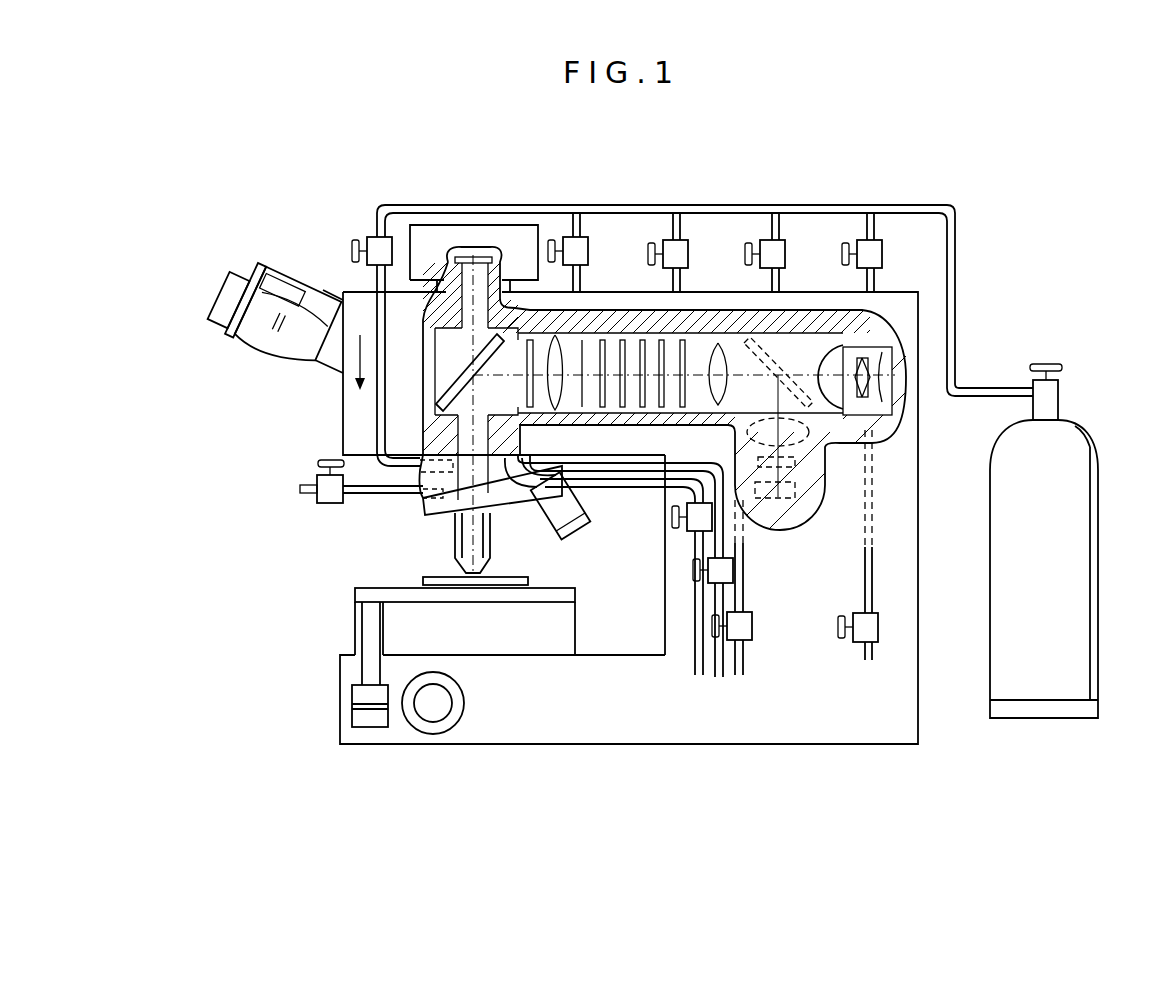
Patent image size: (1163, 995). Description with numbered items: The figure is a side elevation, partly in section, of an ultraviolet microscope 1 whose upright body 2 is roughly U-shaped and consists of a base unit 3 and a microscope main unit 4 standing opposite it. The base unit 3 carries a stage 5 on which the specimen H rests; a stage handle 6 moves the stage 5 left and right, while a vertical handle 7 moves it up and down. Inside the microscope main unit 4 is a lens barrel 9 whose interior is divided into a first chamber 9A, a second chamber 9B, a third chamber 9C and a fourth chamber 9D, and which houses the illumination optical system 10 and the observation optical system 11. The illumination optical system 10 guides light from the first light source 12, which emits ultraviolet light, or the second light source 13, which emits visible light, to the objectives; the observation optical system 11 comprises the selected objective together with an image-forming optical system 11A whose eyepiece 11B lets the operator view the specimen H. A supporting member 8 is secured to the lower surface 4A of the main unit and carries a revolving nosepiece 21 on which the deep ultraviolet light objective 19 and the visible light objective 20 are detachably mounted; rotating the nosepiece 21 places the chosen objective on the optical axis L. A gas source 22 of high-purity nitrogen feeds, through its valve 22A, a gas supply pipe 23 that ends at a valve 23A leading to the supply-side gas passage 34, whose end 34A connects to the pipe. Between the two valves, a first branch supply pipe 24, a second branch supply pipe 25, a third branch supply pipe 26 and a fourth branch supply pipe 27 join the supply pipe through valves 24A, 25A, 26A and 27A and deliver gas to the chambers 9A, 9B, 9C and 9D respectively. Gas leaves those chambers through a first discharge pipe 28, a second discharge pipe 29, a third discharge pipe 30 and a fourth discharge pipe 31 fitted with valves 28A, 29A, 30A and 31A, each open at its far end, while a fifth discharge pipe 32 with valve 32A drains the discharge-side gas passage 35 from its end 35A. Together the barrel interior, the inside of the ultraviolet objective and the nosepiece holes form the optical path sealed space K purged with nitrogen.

The ultraviolet microscope 1 is at (778, 163).
The upright body 2 is at (800, 750).
The base unit 3 is at (652, 735).
The microscope main unit 4 is at (908, 320).
The lower surface 4A is at (507, 512).
The stage 5 is at (360, 596).
The stage handle 6 is at (368, 722).
The vertical handle 7 is at (432, 722).
The supporting member 8 is at (442, 448).
The lens barrel 9 is at (662, 414).
The first chamber 9A is at (912, 348).
The second chamber 9B is at (835, 342).
The third chamber 9C is at (580, 407).
The fourth chamber 9D is at (530, 407).
The illumination optical system 10 is at (801, 368).
The observation optical system 11 is at (462, 292).
The image-forming optical system 11A is at (466, 355).
The eyepiece 11B is at (258, 338).
The first light source 12 is at (865, 400).
The second light source 13 is at (818, 497).
The deep ultraviolet light objective 19 is at (463, 547).
The visible light objective 20 is at (565, 540).
The revolving nosepiece 21 is at (500, 510).
The gas source 22 is at (1073, 677).
The valve 22A is at (1050, 398).
The gas supply pipe 23 is at (705, 207).
The valve 23A is at (378, 243).
The first branch supply pipe 24 is at (875, 243).
The valve 24A is at (880, 255).
The second branch supply pipe 25 is at (782, 243).
The valve 25A is at (765, 252).
The third branch supply pipe 26 is at (672, 243).
The valve 26A is at (682, 255).
The fourth branch supply pipe 27 is at (573, 240).
The valve 27A is at (580, 252).
The first discharge pipe 28 is at (867, 602).
The valve 28A is at (870, 645).
The second discharge pipe 29 is at (745, 592).
The valve 29A is at (753, 628).
The third discharge pipe 30 is at (720, 675).
The valve 30A is at (710, 575).
The fourth discharge pipe 31 is at (698, 672).
The valve 31A is at (688, 522).
The fifth discharge pipe 32 is at (365, 497).
The valve 32A is at (330, 500).
The supply-side gas passage 34 is at (438, 462).
The one end of supply-side gas passage 34A is at (418, 458).
The discharge-side gas passage 35 is at (418, 512).
The one end of discharge-side gas passage 35A is at (428, 500).
The optical path sealed space K is at (778, 393).
The optical axis L is at (460, 583).
The specimen H is at (470, 598).